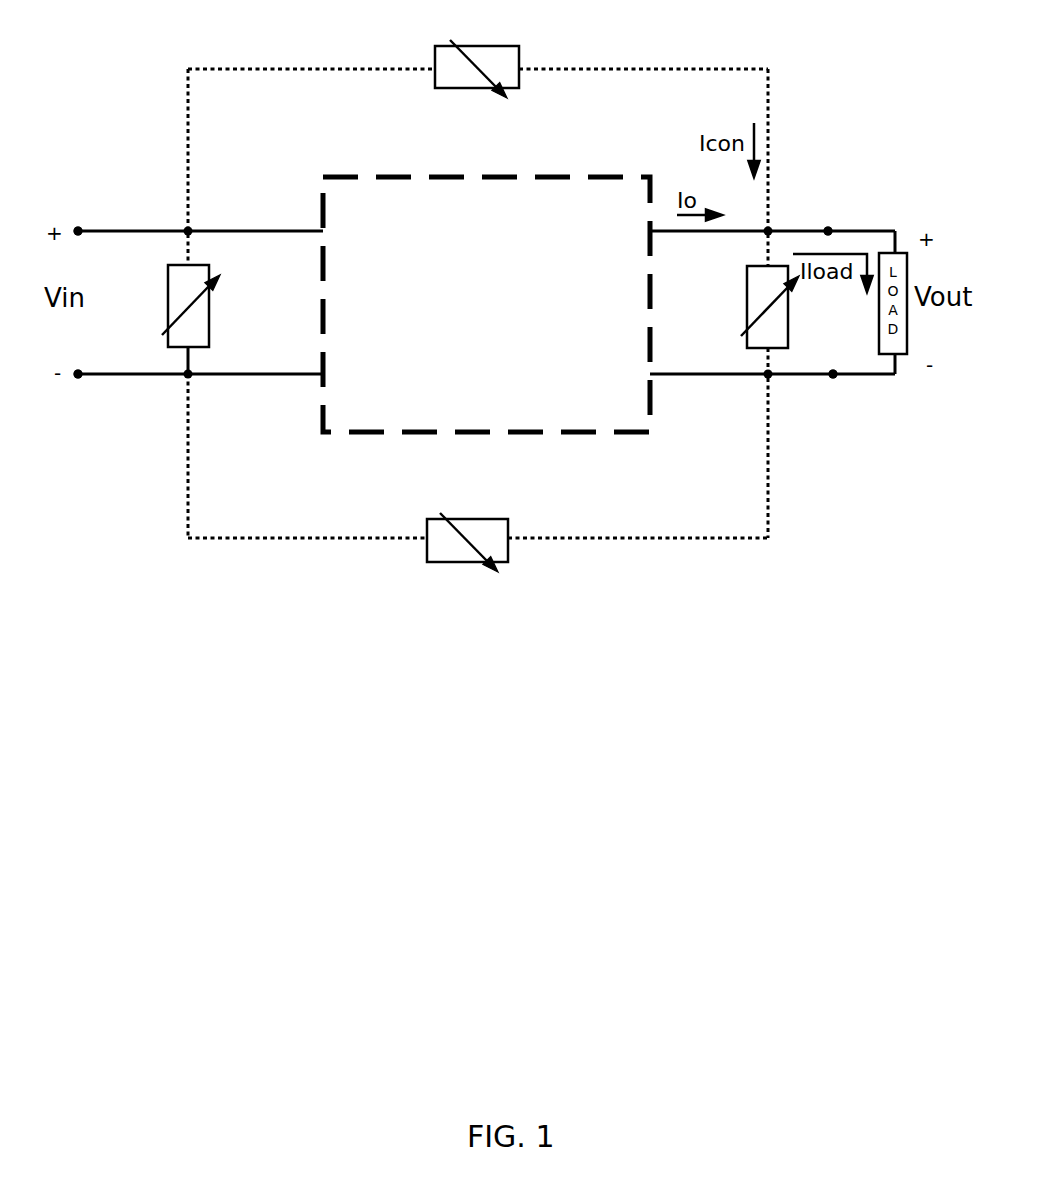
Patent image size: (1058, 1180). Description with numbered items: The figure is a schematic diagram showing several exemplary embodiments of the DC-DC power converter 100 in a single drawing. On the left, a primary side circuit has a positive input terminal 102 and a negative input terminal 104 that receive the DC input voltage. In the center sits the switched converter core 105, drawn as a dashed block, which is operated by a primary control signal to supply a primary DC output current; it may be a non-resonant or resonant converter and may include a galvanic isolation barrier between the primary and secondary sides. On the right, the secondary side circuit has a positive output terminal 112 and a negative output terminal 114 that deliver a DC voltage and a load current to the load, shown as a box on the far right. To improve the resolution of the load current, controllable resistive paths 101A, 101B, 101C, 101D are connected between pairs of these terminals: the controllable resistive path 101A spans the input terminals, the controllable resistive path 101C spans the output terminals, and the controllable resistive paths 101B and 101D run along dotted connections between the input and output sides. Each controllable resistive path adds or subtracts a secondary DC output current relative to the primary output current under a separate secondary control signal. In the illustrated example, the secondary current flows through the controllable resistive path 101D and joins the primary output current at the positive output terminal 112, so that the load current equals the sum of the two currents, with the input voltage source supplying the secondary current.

The DC-DC power converter 100 is at (462, 339).
The controllable resistive path 101A is at (149, 292).
The controllable resistive path 101B is at (437, 561).
The controllable resistive path 101C is at (732, 307).
The controllable resistive path 101D is at (450, 50).
The positive input terminal 102 is at (112, 212).
The negative input terminal 104 is at (114, 401).
The switched converter core 105 is at (468, 327).
The positive output terminal 112 is at (857, 209).
The negative output terminal 114 is at (869, 401).